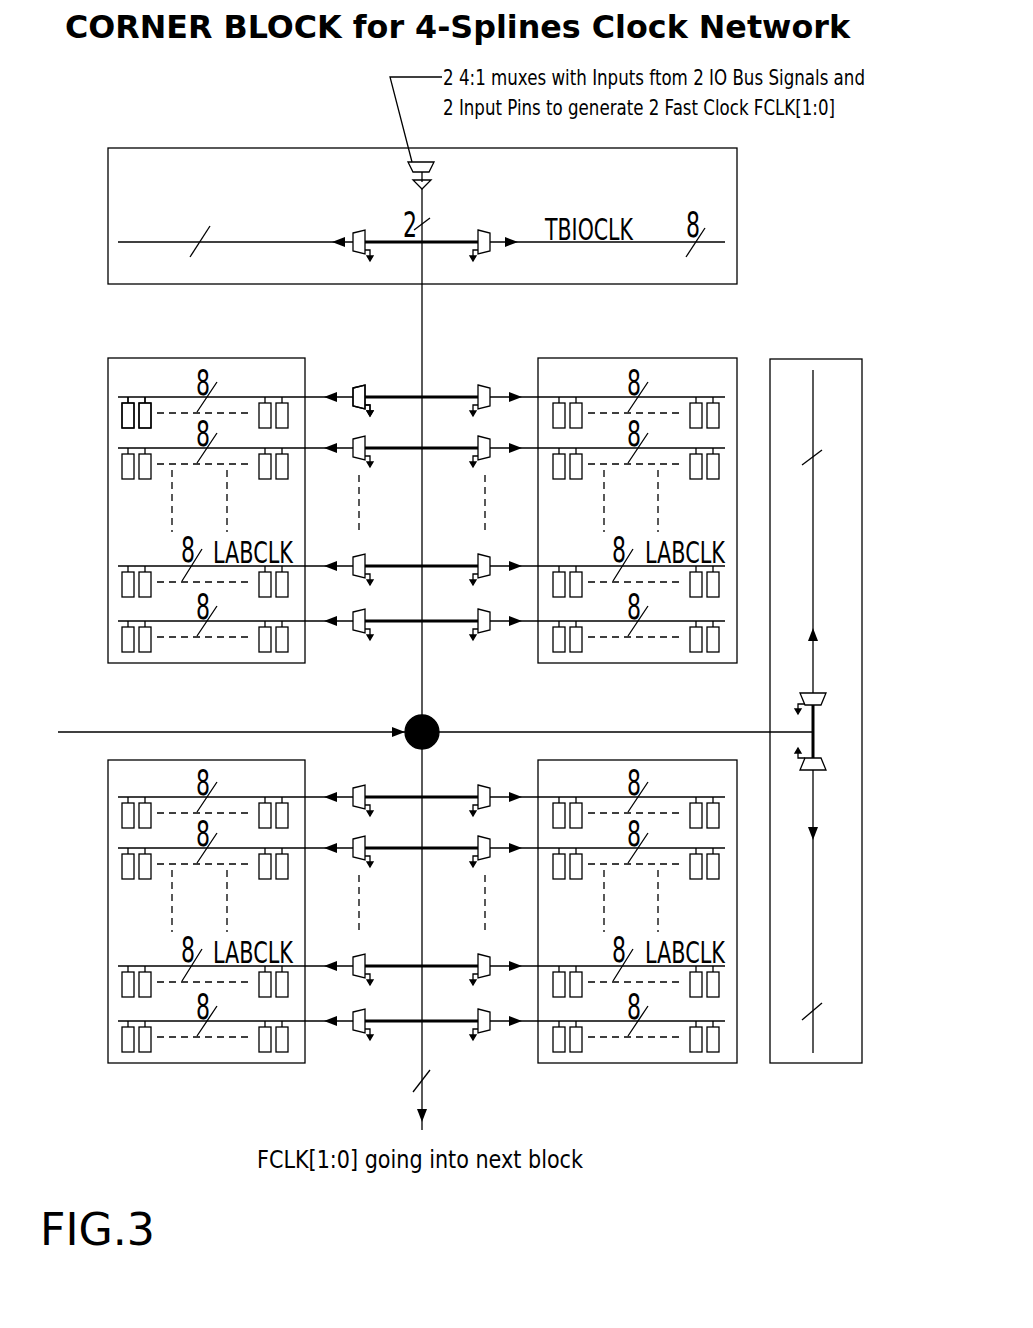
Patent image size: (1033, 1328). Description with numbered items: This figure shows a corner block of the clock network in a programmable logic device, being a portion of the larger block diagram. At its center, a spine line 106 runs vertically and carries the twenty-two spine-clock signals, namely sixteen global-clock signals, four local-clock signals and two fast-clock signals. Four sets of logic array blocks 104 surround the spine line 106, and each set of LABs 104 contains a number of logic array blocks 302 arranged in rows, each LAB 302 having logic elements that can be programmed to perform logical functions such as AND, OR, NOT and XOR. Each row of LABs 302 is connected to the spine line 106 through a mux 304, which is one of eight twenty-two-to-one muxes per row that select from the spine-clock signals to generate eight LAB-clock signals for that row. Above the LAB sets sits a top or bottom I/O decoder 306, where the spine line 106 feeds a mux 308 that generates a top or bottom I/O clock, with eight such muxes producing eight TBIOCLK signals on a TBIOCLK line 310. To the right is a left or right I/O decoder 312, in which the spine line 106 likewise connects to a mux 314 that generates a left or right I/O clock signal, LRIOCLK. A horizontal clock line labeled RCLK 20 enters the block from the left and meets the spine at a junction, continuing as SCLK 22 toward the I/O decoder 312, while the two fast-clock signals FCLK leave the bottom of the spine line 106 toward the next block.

The top or bottom I/O decoder 306 is at (737, 180).
The mux 308 is at (357, 230).
The TBIOCLK line 310 is at (222, 250).
The spine line 106 is at (422, 312).
The set of logic array blocks 104 is at (108, 524).
The logic array block 302 is at (120, 426).
The mux 304 is at (357, 386).
The left or right I/O decoder 312 is at (795, 359).
The mux 314 is at (800, 698).
The RCLK row clock line 20 is at (283, 718).
The SCLK spline clock line 22 is at (431, 478).